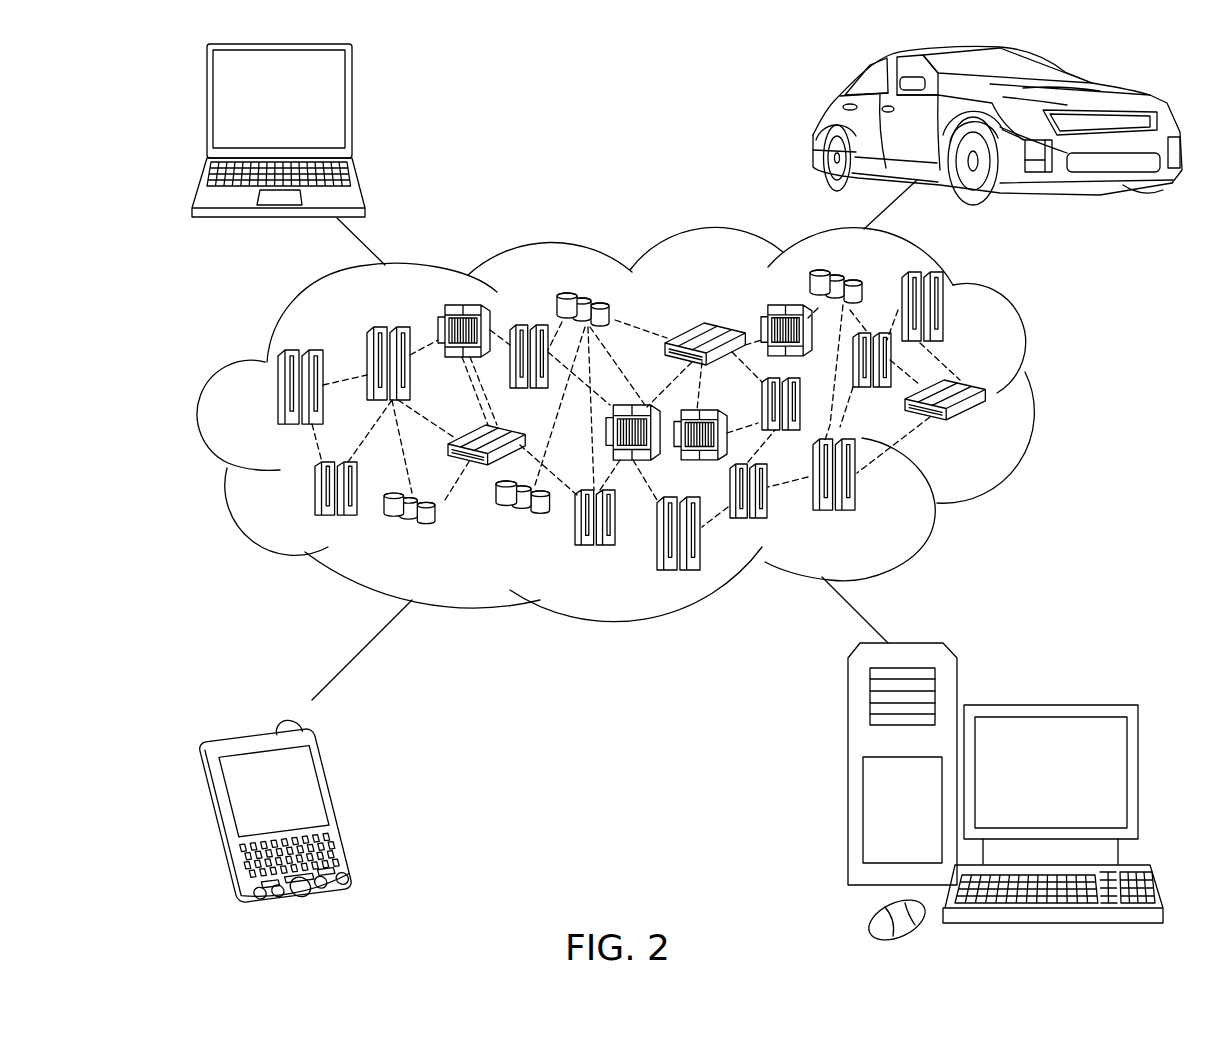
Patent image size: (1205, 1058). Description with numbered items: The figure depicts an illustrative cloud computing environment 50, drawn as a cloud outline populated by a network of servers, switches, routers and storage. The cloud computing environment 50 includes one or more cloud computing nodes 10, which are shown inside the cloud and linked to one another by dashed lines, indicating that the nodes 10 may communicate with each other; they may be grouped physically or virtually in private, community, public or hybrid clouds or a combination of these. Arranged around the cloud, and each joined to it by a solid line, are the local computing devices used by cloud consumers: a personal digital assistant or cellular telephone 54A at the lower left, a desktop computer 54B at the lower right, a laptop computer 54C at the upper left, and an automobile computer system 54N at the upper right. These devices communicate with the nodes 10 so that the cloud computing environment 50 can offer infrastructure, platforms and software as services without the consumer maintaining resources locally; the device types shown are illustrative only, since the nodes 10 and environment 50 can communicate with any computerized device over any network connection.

The cloud computing nodes 10 is at (987, 430).
The cloud computing environment 50 is at (654, 424).
The personal digital assistant (PDA) or cellular telephone 54A is at (342, 803).
The desktop computer 54B is at (1048, 703).
The laptop computer 54C is at (352, 107).
The automobile computer system 54N is at (822, 127).